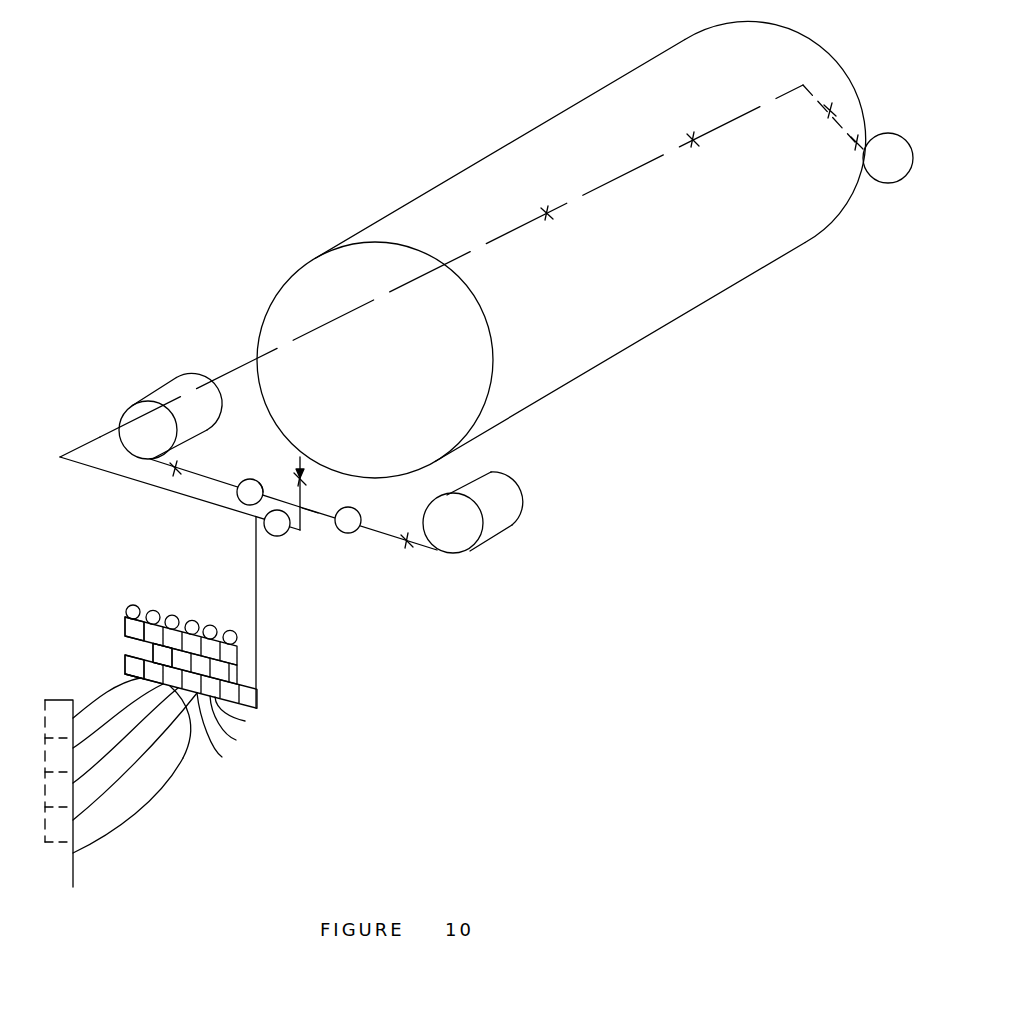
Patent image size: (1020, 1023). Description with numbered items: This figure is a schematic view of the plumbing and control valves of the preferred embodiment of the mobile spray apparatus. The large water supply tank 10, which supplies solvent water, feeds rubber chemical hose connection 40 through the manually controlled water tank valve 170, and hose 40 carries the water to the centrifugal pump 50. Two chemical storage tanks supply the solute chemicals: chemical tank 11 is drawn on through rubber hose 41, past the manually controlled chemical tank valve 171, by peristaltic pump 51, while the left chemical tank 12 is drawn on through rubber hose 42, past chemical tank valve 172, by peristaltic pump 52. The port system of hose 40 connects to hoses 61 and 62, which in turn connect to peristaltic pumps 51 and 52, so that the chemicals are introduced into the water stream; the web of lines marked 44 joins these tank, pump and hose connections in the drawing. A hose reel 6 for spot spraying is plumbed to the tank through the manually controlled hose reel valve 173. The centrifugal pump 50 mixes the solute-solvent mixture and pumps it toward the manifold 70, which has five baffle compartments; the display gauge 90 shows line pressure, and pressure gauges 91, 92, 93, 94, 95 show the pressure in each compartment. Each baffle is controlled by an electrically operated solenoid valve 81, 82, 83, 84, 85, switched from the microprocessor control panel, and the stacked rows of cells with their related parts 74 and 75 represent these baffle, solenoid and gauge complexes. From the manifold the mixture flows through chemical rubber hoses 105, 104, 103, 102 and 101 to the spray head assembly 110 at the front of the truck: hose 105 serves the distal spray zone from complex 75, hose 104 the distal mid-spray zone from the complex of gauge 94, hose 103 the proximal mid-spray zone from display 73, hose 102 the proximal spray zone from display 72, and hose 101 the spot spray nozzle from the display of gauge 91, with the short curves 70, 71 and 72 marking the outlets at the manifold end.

The water supply tank 10 is at (578, 101).
The hose reel 6 is at (868, 137).
The hose reel valve 173 is at (857, 150).
The chemical tank 11 is at (157, 387).
The left chemical tank 12 is at (524, 483).
The rubber hose 41 is at (206, 478).
The chemical tank valve 171 is at (178, 465).
The peristaltic pump 51 is at (237, 492).
The hose 61 is at (261, 481).
The web 44 is at (186, 496).
The centrifugal pump 50 is at (291, 536).
The rubber chemical hose connection 40 is at (299, 485).
The water tank valve 170 is at (305, 482).
The rubber hose 42 is at (393, 539).
The peristaltic pump 52 is at (352, 508).
The hose 62 is at (314, 514).
The chemical tank valve 172 is at (409, 547).
The pressure gauge 95 is at (135, 605).
The pressure gauge 94 is at (158, 610).
The pressure gauge 93 is at (172, 615).
The pressure gauge 92 is at (190, 622).
The pressure gauge 91 is at (221, 613).
The display gauge 90 is at (240, 631).
The solenoid valve 83 is at (205, 657).
The solenoid valve 82 is at (215, 672).
The solenoid valve 81 is at (232, 678).
The solenoid valve 85 is at (127, 636).
The solenoid valve 84 is at (153, 648).
The baffle/solenoid/pressure gauge complex 75 is at (125, 657).
The dispenser 74 is at (143, 676).
The spray head assembly 110 is at (63, 698).
The chemical rubber hose 105 is at (110, 700).
The chemical rubber hose 104 is at (108, 735).
The chemical rubber hose 103 is at (110, 768).
The chemical rubber hose 102 is at (114, 802).
The chemical rubber hose 101 is at (126, 828).
The baffle/solenoid/pressure gauge display 73 is at (184, 758).
The baffle/solenoid/pressure gauge display 72 is at (222, 757).
The feed line 71 is at (240, 740).
The manifold 70 is at (245, 721).